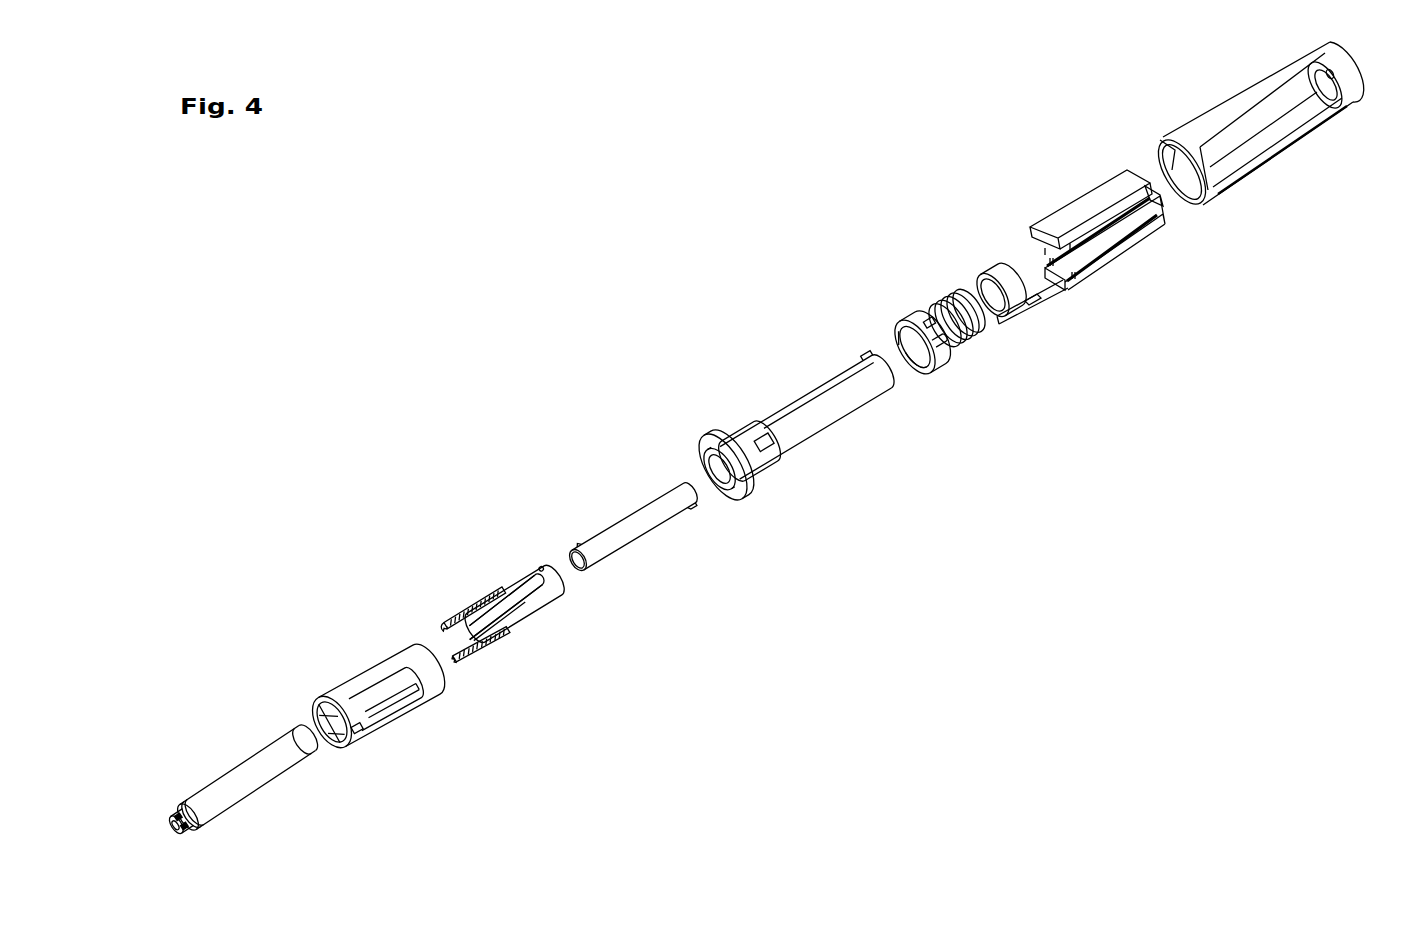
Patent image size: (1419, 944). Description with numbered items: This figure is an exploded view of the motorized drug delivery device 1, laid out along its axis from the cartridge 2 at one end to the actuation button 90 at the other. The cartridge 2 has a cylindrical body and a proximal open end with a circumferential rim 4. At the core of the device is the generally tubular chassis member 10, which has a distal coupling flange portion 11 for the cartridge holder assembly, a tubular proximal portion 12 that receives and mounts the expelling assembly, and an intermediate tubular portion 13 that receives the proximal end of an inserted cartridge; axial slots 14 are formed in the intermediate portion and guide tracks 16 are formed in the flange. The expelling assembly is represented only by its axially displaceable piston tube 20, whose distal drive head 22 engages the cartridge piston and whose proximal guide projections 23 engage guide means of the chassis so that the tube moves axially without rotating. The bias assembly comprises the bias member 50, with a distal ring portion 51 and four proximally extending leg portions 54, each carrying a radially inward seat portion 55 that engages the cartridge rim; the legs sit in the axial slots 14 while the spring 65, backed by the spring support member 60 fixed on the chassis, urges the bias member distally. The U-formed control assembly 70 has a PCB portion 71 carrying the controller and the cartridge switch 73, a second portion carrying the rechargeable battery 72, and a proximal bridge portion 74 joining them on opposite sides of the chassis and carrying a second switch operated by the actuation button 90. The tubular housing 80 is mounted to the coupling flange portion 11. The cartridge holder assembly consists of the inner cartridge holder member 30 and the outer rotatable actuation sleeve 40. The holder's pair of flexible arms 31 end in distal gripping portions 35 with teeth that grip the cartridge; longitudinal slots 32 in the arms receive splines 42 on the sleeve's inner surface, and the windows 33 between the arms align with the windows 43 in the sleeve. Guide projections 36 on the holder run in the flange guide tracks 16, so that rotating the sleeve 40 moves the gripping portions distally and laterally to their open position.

The motorized drug delivery device 1 is at (610, 296).
The cartridge 2 is at (226, 770).
The circumferential rim 4 is at (302, 727).
The chassis member 10 is at (795, 452).
The distal coupling flange portion 11 is at (712, 438).
The tubular proximal portion 12 is at (831, 421).
The intermediate tubular portion 13 is at (764, 445).
The axial slots 14 is at (752, 427).
The flange portion guide tracks 16 is at (701, 463).
The piston tube 20 is at (619, 524).
The distal drive head 22 is at (588, 572).
The proximal guide projections 23 is at (694, 509).
The cartridge holder member 30 is at (553, 613).
The flexible arms 31 is at (513, 600).
The slots 32 is at (476, 606).
The gaps (windows) 33 is at (513, 623).
The distal gripping portion 35 is at (460, 664).
The cartridge holder guide projections 36 is at (541, 563).
The actuation sleeve 40 is at (360, 668).
The spline 42 is at (358, 731).
The window 43 is at (388, 708).
The bias member 50 is at (935, 365).
The distal ring portion 51 is at (918, 372).
The leg portions 54 is at (942, 341).
The seat portion 55 is at (929, 321).
The spring support member 60 is at (982, 268).
The spring 65 is at (946, 295).
The control assembly 70 is at (1084, 283).
The PCB portion 71 is at (1127, 241).
The rechargeable battery 72 is at (1083, 203).
The cartridge switch 73 is at (1038, 302).
The proximal bridge portion 74 is at (1152, 196).
The housing 80 is at (1266, 172).
The proximal actuation button 90 is at (1358, 99).